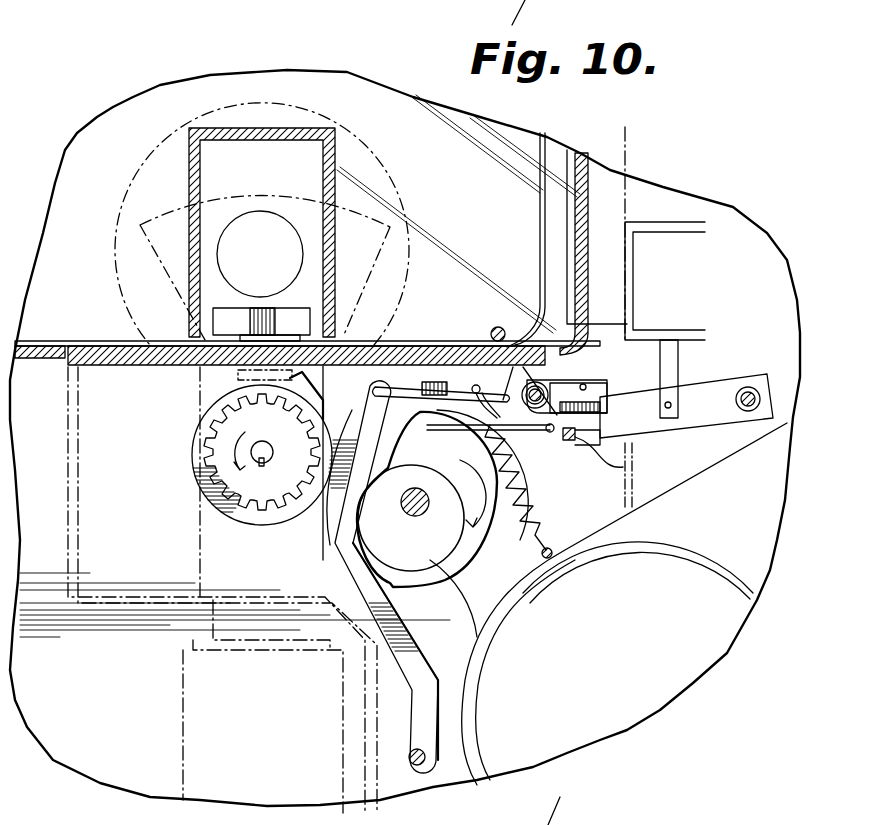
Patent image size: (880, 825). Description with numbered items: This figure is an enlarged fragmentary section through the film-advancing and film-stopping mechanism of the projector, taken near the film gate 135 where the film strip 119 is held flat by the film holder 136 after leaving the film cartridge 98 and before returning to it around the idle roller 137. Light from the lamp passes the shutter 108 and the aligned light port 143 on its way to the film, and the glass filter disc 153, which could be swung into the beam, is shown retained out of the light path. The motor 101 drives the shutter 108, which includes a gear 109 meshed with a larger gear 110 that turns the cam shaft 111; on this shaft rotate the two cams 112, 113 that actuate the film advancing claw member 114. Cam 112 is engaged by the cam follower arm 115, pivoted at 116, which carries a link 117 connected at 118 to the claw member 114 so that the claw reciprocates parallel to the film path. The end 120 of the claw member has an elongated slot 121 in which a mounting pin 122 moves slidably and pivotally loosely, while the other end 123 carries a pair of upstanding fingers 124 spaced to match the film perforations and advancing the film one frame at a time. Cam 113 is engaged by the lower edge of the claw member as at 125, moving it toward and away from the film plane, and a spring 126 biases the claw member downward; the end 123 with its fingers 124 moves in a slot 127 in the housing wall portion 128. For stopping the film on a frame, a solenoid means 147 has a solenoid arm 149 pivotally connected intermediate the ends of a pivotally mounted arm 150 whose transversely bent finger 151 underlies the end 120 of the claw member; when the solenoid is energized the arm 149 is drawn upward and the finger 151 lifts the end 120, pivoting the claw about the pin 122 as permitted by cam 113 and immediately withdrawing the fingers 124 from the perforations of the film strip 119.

The film cartridge 98 is at (590, 187).
The motor 101 is at (693, 562).
The shutter 108 is at (197, 447).
The gear 109 is at (203, 475).
The larger gear 110 is at (330, 540).
The cam shaft 111 is at (417, 514).
The cam 112 is at (433, 542).
The cam 113 is at (433, 543).
The film advancing claw member 114 is at (448, 392).
The cam follower arm 115 is at (413, 657).
The pivot 116 is at (420, 752).
The link 117 is at (425, 382).
The connection 118 is at (528, 352).
The film strip 119 is at (380, 343).
The end of claw member 120 is at (612, 380).
The elongated slot 121 is at (582, 387).
The mounting pin 122 is at (532, 420).
The other end of claw member 123 is at (303, 415).
The upstanding fingers 124 is at (352, 343).
The lower edge engagement point 125 is at (407, 440).
The spring 126 is at (533, 507).
The slot 127 is at (300, 327).
The housing wall portion 128 is at (173, 358).
The film gate 135 is at (230, 385).
The film holder 136 is at (212, 318).
The idle roller 137 is at (497, 328).
The light port 143 is at (253, 210).
The solenoid means 147 is at (703, 243).
The solenoid arm 149 is at (677, 362).
The pivotally mounted arm 150 is at (708, 430).
The transversely bent finger 151 is at (625, 462).
The glass filter disc 153 is at (277, 98).